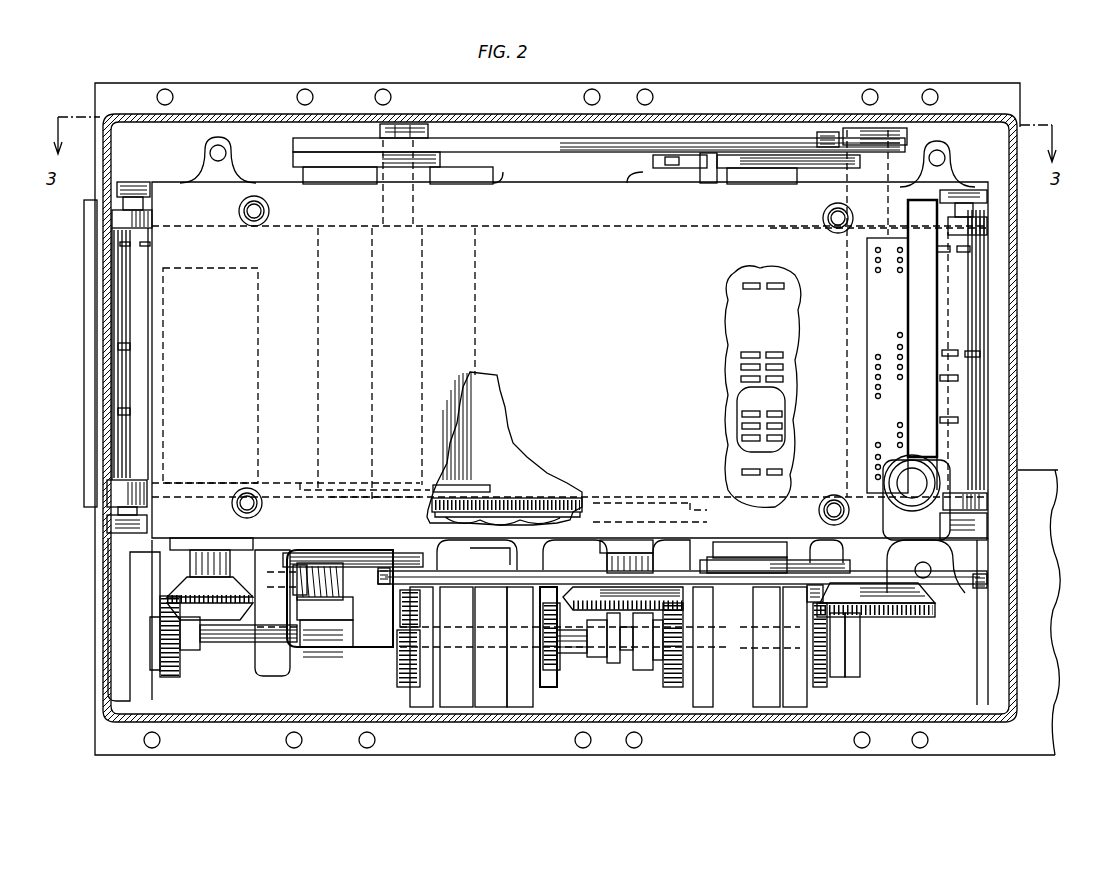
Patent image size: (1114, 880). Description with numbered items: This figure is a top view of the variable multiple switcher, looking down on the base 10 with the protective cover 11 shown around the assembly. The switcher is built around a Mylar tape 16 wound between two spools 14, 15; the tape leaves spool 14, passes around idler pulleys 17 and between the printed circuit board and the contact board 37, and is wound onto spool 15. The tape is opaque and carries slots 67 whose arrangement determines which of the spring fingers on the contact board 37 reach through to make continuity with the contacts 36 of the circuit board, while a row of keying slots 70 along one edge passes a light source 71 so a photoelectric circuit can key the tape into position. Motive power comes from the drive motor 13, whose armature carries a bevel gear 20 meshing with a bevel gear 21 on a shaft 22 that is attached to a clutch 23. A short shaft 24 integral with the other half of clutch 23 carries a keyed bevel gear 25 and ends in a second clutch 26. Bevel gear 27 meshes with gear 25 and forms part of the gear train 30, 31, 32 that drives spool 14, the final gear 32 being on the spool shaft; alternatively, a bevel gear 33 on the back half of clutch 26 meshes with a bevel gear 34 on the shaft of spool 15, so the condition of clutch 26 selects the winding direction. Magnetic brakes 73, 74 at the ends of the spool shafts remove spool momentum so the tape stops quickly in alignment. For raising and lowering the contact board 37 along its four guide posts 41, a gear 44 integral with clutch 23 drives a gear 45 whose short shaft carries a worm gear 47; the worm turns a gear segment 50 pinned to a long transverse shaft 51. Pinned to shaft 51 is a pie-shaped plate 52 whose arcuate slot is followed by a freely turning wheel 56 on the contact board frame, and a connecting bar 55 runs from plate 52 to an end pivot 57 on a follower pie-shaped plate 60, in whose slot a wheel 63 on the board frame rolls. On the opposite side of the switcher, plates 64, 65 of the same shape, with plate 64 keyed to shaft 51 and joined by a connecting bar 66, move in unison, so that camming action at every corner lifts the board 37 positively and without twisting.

The base 10 is at (1040, 600).
The cover 11 is at (1013, 286).
The drive motor 13 is at (260, 344).
The spool 14 is at (463, 441).
The spool 15 is at (778, 228).
The Mylar tape 16 is at (122, 310).
The idler pulleys 17 is at (128, 220).
The bevel gear 20 is at (246, 612).
The bevel gear 21 is at (172, 663).
The shaft 22 is at (226, 645).
The clutch 23 is at (466, 607).
The short shaft 24 is at (570, 650).
The bevel gear 25 is at (678, 672).
The clutch 26 is at (745, 607).
The bevel gear 27 is at (583, 594).
The gear 30 is at (620, 503).
The gear 31 is at (500, 501).
The gear 32 is at (338, 490).
The bevel gear 33 is at (818, 676).
The bevel gear 34 is at (928, 608).
The contacts 36 is at (742, 426).
The contact board 37 is at (162, 172).
The guide posts 41 is at (266, 212).
The gear 44 is at (405, 666).
The gear 45 is at (400, 601).
The worm gear 47 is at (310, 600).
The gear segment 50 is at (332, 581).
The transverse shaft 51 is at (326, 657).
The pie-shaped plate 52 is at (370, 559).
The connecting bar 55 is at (505, 580).
The wheel 56 is at (298, 562).
The end pivot 57 is at (812, 590).
The pie-shaped plate 60 is at (790, 560).
The wheel 63 is at (720, 562).
The plate 64 is at (310, 162).
The plate 65 is at (800, 164).
The connecting bar 66 is at (574, 149).
The slots 67 is at (133, 412).
The keying slots 70 is at (767, 471).
The light source 71 is at (915, 483).
The magnetic brake 73 is at (422, 130).
The magnetic brake 74 is at (878, 138).